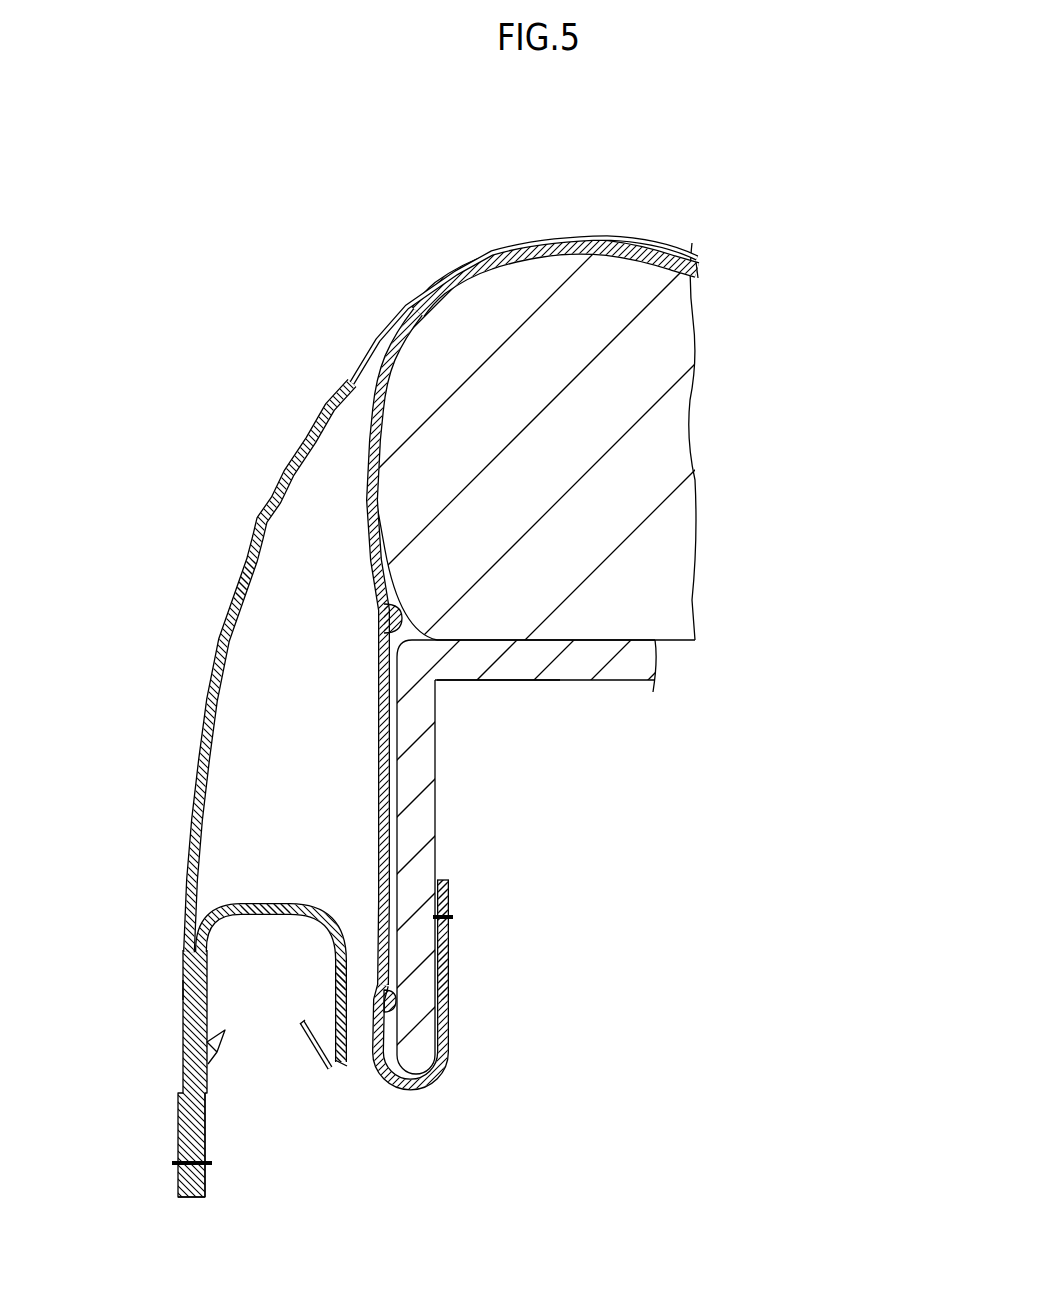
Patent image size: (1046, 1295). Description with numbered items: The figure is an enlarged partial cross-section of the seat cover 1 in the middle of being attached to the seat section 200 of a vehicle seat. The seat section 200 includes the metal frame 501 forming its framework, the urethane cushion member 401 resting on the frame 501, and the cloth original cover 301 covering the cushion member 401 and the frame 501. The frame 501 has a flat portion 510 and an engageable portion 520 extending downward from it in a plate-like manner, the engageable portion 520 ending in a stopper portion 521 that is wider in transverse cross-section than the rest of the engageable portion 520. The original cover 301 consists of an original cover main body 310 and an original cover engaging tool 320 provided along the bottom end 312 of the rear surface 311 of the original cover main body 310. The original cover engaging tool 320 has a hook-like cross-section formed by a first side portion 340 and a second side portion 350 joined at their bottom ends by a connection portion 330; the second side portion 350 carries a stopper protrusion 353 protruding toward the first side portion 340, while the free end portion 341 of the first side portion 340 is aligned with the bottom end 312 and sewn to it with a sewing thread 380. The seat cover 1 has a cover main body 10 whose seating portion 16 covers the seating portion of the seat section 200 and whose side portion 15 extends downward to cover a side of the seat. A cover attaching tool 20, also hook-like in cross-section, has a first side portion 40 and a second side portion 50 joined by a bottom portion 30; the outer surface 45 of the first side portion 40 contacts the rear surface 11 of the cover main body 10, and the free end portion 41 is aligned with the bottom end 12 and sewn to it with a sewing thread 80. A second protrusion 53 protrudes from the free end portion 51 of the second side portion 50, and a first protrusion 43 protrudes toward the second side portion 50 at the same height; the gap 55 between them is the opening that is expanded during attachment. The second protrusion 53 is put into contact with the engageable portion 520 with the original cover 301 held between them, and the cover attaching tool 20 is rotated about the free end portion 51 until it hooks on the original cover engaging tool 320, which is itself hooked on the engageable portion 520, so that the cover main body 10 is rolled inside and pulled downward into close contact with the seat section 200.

The seat cover 1 is at (408, 727).
The cover main body 10 is at (408, 727).
The rear surface 11 is at (240, 618).
The bottom end 12 is at (178, 1167).
The left side portion 15 is at (232, 602).
The seating portion 16 is at (623, 243).
The cover attaching tool 20 is at (286, 985).
The bottom portion 30 is at (268, 903).
The first side portion 40 is at (208, 1118).
The free end portion 41 is at (208, 1137).
The first protrusion 43 is at (222, 1045).
The outer surface 45 is at (186, 991).
The second side portion 50 is at (355, 990).
The free end portion 51 is at (333, 1073).
The second protrusion 53 is at (313, 1050).
The gap 55 is at (352, 978).
The sewing thread 80 is at (208, 1180).
The seat section 200 is at (482, 653).
The original cover 301 is at (494, 664).
The original cover main body 310 is at (380, 786).
The rear surface 311 is at (384, 608).
The bottom end 312 is at (450, 883).
The original cover engaging tool 320 is at (440, 930).
The connection portion 330 is at (425, 1085).
The first side portion 340 is at (440, 963).
The free end portion 341 is at (440, 880).
The second side portion 350 is at (383, 1032).
The stopper protrusion 353 is at (395, 1000).
The sewing thread 380 is at (452, 900).
The cushion member 401 is at (667, 353).
The frame 501 is at (503, 682).
The flat portion 510 is at (553, 682).
The engageable portion 520 is at (437, 767).
The stopper portion 521 is at (412, 1047).